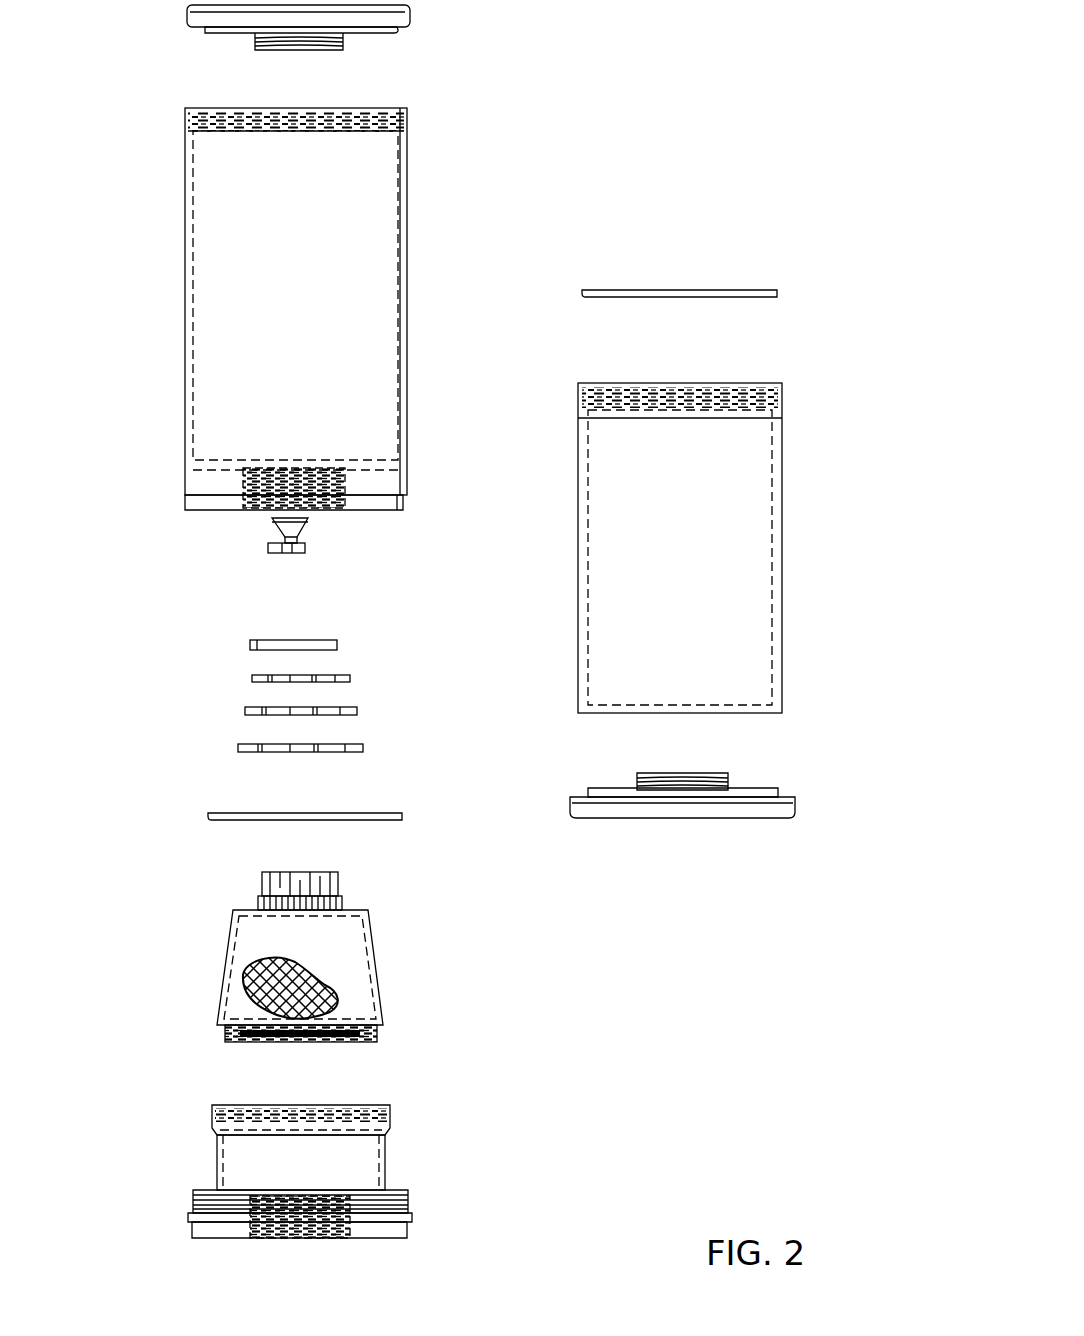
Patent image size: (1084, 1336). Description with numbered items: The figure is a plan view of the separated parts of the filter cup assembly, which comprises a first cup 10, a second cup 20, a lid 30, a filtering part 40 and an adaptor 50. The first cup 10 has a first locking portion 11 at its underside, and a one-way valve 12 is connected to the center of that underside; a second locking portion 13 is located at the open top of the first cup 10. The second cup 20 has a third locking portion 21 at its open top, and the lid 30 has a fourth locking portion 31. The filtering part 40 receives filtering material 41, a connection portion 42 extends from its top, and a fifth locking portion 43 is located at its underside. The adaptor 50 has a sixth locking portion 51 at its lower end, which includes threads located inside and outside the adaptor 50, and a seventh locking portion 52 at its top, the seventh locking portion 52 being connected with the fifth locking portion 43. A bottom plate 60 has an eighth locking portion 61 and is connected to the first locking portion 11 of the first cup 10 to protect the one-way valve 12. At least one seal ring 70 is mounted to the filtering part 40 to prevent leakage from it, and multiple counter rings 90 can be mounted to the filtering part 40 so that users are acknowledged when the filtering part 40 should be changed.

The first cup 10 is at (343, 285).
The first locking portion 11 is at (392, 508).
The one-way valve 12 is at (266, 526).
The second locking portion 13 is at (405, 132).
The second cup 20 is at (742, 540).
The third locking portion 21 is at (747, 383).
The lid 30 is at (398, 22).
The fourth locking portion 31 is at (340, 50).
The filtering part 40 is at (228, 938).
The filtering material 41 is at (335, 992).
The connection portion 42 is at (333, 897).
The fifth locking portion 43 is at (380, 1035).
The adaptor 50 is at (267, 1158).
The sixth locking portion 51 is at (312, 1238).
The seventh locking portion 52 is at (390, 1106).
The bottom plate 60 is at (788, 803).
The eighth locking portion 61 is at (717, 773).
The seal ring 70 is at (402, 817).
The counter rings 90 is at (377, 628).